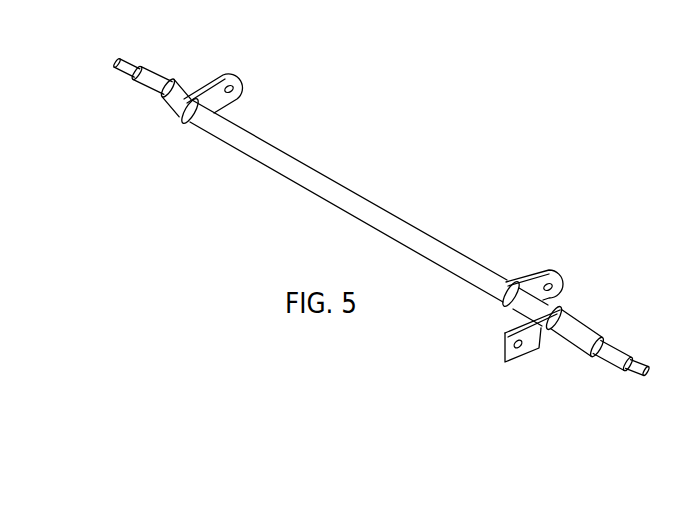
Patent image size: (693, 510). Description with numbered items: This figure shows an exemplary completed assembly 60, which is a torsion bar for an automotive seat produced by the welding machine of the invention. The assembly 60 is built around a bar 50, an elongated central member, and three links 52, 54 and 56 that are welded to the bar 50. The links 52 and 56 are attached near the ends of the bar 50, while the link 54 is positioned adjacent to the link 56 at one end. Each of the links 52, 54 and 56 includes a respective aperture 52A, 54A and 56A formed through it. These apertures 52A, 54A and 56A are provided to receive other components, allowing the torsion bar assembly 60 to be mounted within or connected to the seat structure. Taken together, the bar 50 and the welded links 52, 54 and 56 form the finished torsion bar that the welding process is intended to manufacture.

The bar 50 is at (376, 206).
The link 52 is at (233, 73).
The aperture 52A is at (238, 91).
The link 54 is at (505, 330).
The aperture 54A is at (523, 345).
The link 56 is at (548, 264).
The aperture 56A is at (562, 289).
The completed assembly 60 is at (384, 226).